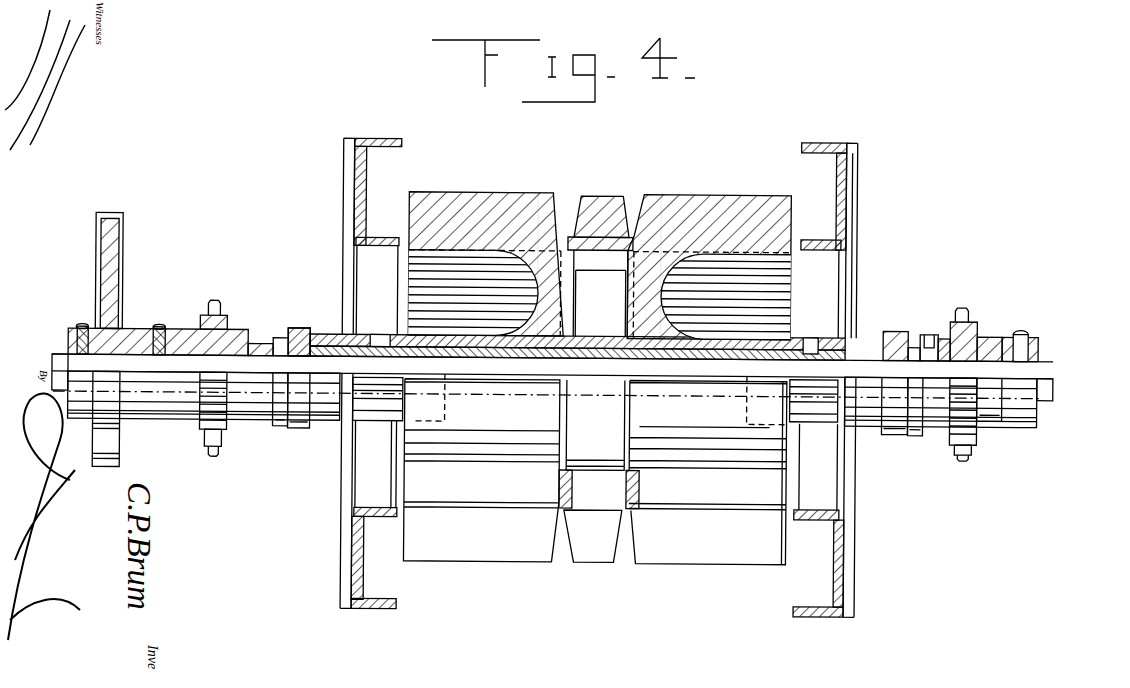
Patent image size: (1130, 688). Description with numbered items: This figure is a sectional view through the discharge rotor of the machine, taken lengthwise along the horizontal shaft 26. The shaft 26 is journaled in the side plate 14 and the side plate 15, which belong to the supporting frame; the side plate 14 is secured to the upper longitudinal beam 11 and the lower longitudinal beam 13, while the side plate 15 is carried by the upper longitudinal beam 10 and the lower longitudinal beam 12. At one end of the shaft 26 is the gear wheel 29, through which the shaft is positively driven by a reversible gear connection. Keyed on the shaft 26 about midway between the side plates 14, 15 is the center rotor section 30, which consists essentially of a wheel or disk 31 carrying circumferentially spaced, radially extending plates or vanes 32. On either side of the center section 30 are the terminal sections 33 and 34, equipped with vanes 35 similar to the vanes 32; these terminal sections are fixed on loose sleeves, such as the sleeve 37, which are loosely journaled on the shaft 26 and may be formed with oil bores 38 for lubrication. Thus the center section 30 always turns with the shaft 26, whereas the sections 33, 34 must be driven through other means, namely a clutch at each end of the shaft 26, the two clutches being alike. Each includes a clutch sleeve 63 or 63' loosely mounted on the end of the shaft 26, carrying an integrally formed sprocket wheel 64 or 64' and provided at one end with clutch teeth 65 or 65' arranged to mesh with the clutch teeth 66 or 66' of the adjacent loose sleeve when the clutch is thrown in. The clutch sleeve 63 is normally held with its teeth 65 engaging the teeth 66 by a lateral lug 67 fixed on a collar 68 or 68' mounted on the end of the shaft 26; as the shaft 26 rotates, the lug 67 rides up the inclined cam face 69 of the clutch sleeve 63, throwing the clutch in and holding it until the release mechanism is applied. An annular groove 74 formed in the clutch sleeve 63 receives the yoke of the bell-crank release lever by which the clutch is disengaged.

The upper longitudinal beam 10 is at (358, 194).
The upper longitudinal beam 11 is at (832, 141).
The lower longitudinal beam 12 is at (395, 608).
The lower longitudinal beam 13 is at (813, 608).
The side plate 14 is at (848, 287).
The side plate 15 is at (350, 274).
The horizontal shaft 26 is at (1027, 371).
The gear wheel 29 is at (120, 228).
The center rotor section 30 is at (610, 248).
The wheel or disk 31 is at (597, 359).
The plates or vanes 32 is at (600, 208).
The terminal rotor section 33 is at (542, 262).
The terminal rotor section 34 is at (663, 257).
The vanes 35 is at (482, 206).
The loose sleeve 37 is at (790, 348).
The oil bores 38 is at (420, 354).
The clutch sleeve 63 is at (1011, 320).
The clutch sleeve 63' is at (189, 322).
The sprocket wheel 64 is at (978, 317).
The sprocket wheel 64' is at (206, 434).
The clutch teeth 65 is at (923, 439).
The clutch teeth 65' is at (267, 430).
The clutch teeth 66 is at (888, 438).
The clutch teeth 66' is at (308, 430).
The lateral lug 67 is at (993, 424).
The collar 68 is at (969, 405).
The collar 68' is at (203, 423).
The inclined cam face 69 is at (986, 398).
The annular groove 74 is at (932, 338).